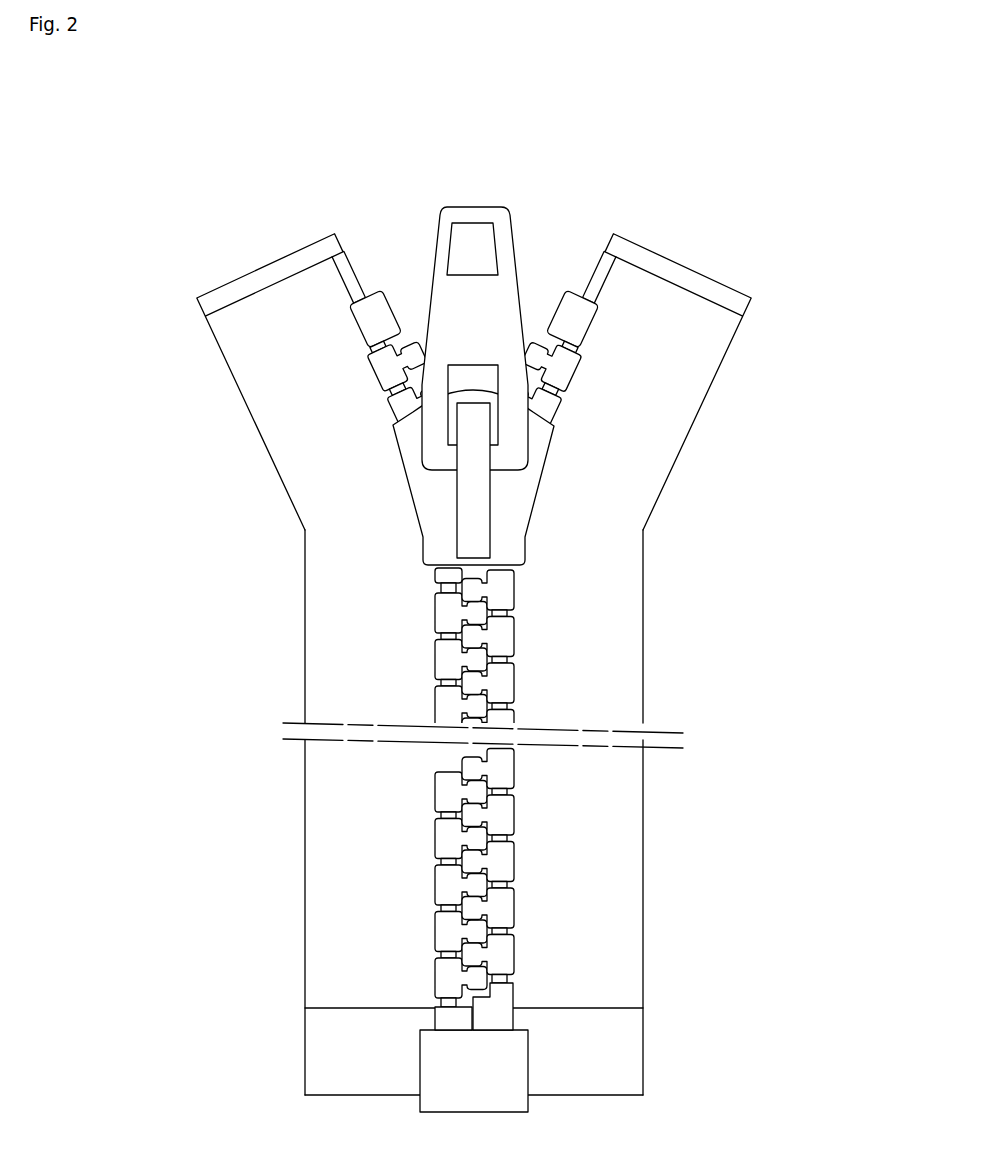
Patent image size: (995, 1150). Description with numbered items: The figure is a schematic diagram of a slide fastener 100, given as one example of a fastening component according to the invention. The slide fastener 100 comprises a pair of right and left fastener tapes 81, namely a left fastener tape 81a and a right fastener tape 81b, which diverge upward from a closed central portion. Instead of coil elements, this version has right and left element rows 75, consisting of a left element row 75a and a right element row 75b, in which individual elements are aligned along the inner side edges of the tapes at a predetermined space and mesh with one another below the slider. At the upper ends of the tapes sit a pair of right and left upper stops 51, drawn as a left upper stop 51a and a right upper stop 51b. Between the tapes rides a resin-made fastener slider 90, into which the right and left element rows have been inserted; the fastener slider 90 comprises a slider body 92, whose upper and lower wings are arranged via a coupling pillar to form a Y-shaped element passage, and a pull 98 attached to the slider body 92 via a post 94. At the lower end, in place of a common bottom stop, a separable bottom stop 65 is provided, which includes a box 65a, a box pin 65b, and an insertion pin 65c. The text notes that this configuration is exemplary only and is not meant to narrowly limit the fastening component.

The slide fastener 100 is at (96, 76).
The upper stops 51 is at (541, 239).
The upper stop 51a is at (379, 292).
The upper stop 51b is at (558, 303).
The fastener tapes 81 is at (461, 664).
The fastener tape 81a is at (258, 352).
The fastener tape 81b is at (695, 345).
The fastener slider 90 is at (446, 341).
The slider body 92 is at (430, 491).
The post 94 is at (478, 495).
The pull 98 is at (500, 308).
The element rows 75 is at (455, 667).
The element row 75a is at (447, 663).
The element row 75b is at (503, 682).
The separable bottom stop 65 is at (463, 1024).
The box 65a is at (502, 1060).
The box pin 65b is at (502, 1003).
The insertion pin 65c is at (453, 1050).